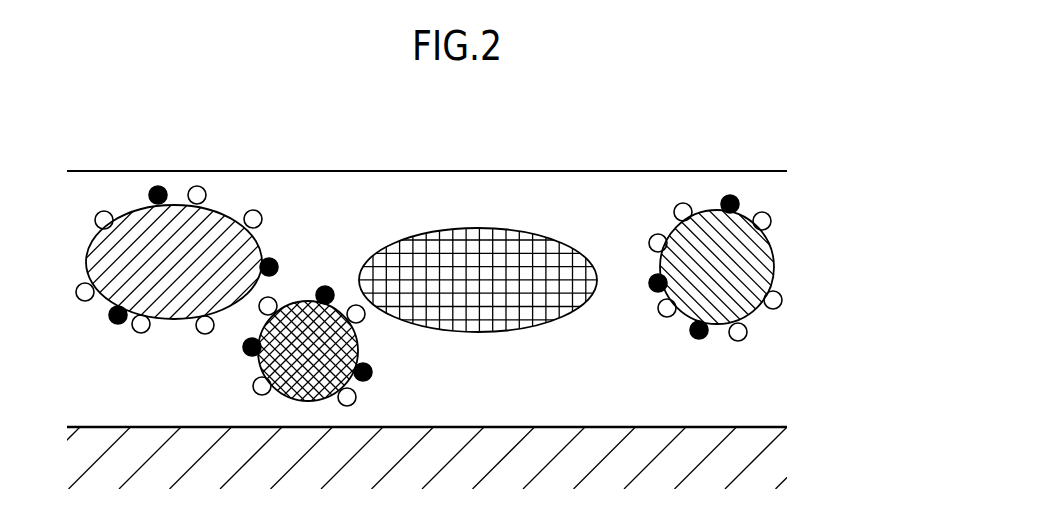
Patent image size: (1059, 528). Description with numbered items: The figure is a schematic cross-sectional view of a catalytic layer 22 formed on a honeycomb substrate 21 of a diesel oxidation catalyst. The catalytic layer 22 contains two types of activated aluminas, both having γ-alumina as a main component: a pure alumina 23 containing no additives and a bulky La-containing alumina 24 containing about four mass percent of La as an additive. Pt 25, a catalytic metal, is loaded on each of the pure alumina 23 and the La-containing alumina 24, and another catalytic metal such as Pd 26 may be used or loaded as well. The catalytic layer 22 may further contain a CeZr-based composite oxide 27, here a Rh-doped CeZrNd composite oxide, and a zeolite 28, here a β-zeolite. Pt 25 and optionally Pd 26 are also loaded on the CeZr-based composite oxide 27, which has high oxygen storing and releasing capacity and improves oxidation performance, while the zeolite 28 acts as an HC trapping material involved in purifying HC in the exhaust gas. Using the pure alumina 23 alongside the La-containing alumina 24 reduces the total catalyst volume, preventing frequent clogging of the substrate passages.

The honeycomb substrate 21 is at (770, 458).
The catalytic layer 22 is at (758, 360).
The pure alumina 23 is at (710, 218).
The La-containing alumina 24 is at (133, 223).
The Pt 25 is at (201, 193).
The Pd 26 is at (160, 190).
The CeZr-based composite oxide 27 is at (302, 323).
The zeolite 28 is at (489, 258).